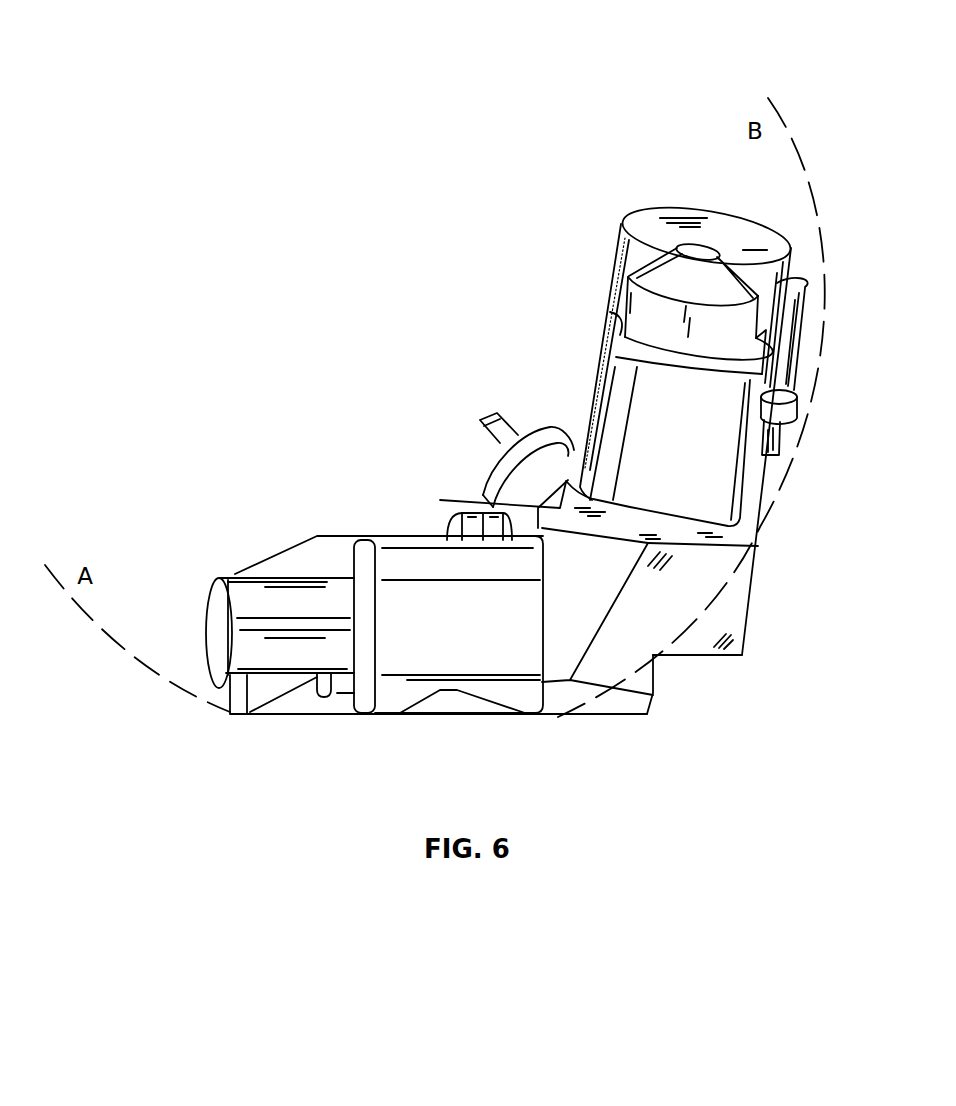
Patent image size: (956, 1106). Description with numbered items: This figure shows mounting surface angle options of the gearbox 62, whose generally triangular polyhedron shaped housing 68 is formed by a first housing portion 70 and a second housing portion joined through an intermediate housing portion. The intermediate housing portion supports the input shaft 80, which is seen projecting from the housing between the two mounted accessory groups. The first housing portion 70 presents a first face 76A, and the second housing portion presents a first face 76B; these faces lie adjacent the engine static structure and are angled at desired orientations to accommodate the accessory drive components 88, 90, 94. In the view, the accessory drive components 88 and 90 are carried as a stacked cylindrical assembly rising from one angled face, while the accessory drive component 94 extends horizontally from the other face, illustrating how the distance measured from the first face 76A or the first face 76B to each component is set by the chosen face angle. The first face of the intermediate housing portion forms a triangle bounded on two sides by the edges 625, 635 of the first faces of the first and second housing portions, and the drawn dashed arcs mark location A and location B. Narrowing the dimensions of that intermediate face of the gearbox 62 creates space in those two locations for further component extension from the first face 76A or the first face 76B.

The gearbox 62 is at (482, 119).
The housing 68 is at (683, 593).
The first housing portion 70 is at (729, 534).
The first face 76A is at (750, 498).
The first face 76B is at (528, 525).
The input shaft 80 is at (480, 422).
The accessory drive component 88 is at (648, 228).
The accessory drive component 90 is at (632, 398).
The accessory drive component 94 is at (277, 604).
The edge 625 is at (648, 540).
The edge 635 is at (535, 528).